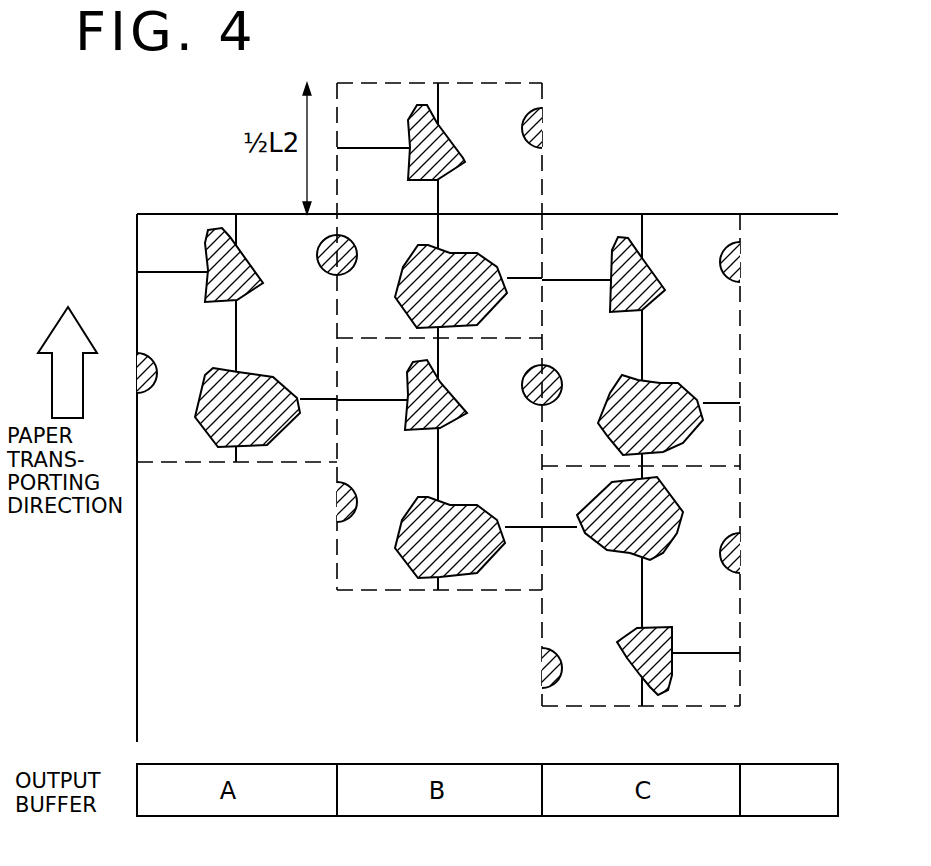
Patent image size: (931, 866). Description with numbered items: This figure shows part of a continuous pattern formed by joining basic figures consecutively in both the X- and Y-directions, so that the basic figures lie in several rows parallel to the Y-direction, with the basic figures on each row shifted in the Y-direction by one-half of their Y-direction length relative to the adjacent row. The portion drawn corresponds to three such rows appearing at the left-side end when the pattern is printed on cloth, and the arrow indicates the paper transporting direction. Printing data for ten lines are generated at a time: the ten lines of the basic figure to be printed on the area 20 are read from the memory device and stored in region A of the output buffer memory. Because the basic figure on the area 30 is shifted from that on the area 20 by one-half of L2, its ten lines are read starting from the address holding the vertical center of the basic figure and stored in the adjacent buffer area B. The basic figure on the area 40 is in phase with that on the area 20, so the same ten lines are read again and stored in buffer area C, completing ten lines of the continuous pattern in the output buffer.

The area 20 is at (158, 214).
The area 30 is at (513, 214).
The area 40 is at (688, 214).